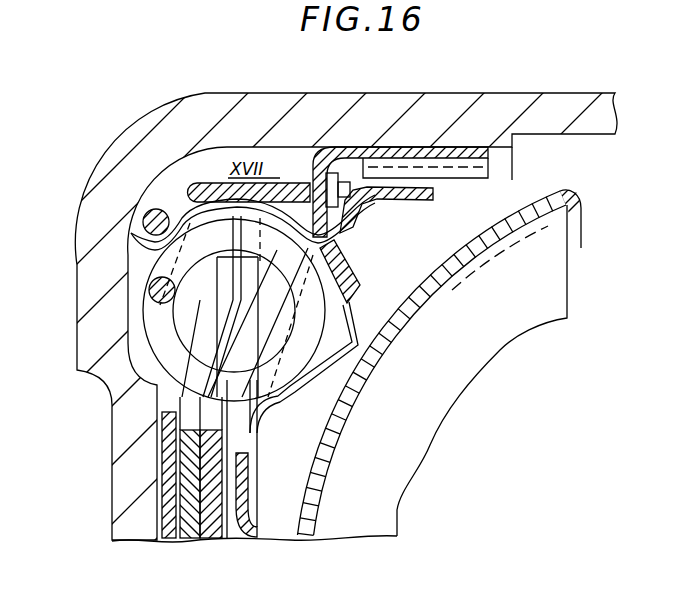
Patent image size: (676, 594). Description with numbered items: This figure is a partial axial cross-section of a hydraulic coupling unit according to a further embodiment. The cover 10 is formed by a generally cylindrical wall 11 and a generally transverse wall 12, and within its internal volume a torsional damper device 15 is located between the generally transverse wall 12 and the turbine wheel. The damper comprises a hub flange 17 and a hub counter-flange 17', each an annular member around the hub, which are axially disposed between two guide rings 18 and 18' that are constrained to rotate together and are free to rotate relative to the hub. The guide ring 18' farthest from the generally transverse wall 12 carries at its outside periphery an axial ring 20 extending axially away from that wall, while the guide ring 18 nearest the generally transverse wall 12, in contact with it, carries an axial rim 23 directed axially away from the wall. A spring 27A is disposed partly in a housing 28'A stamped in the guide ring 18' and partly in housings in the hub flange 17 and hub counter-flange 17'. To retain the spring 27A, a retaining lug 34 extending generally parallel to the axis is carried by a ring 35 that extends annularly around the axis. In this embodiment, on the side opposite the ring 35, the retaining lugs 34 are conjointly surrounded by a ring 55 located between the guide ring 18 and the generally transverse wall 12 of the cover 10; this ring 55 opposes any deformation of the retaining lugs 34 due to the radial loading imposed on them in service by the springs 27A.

The cover 10 is at (115, 132).
The generally cylindrical wall 11 is at (550, 93).
The generally transverse wall 12 is at (110, 497).
The torsional damper device 15 is at (352, 310).
The hub flange 17 is at (187, 297).
The hub counter-flange 17' is at (338, 297).
The guide ring 18 is at (338, 297).
The guide ring 18' is at (338, 297).
The axial ring 20 is at (408, 147).
The axial rim 23 is at (275, 210).
The spring 27A is at (293, 383).
The housing 28'A is at (322, 375).
The retaining lug 34 is at (205, 205).
The ring 35 is at (390, 212).
The ring 55 is at (153, 208).